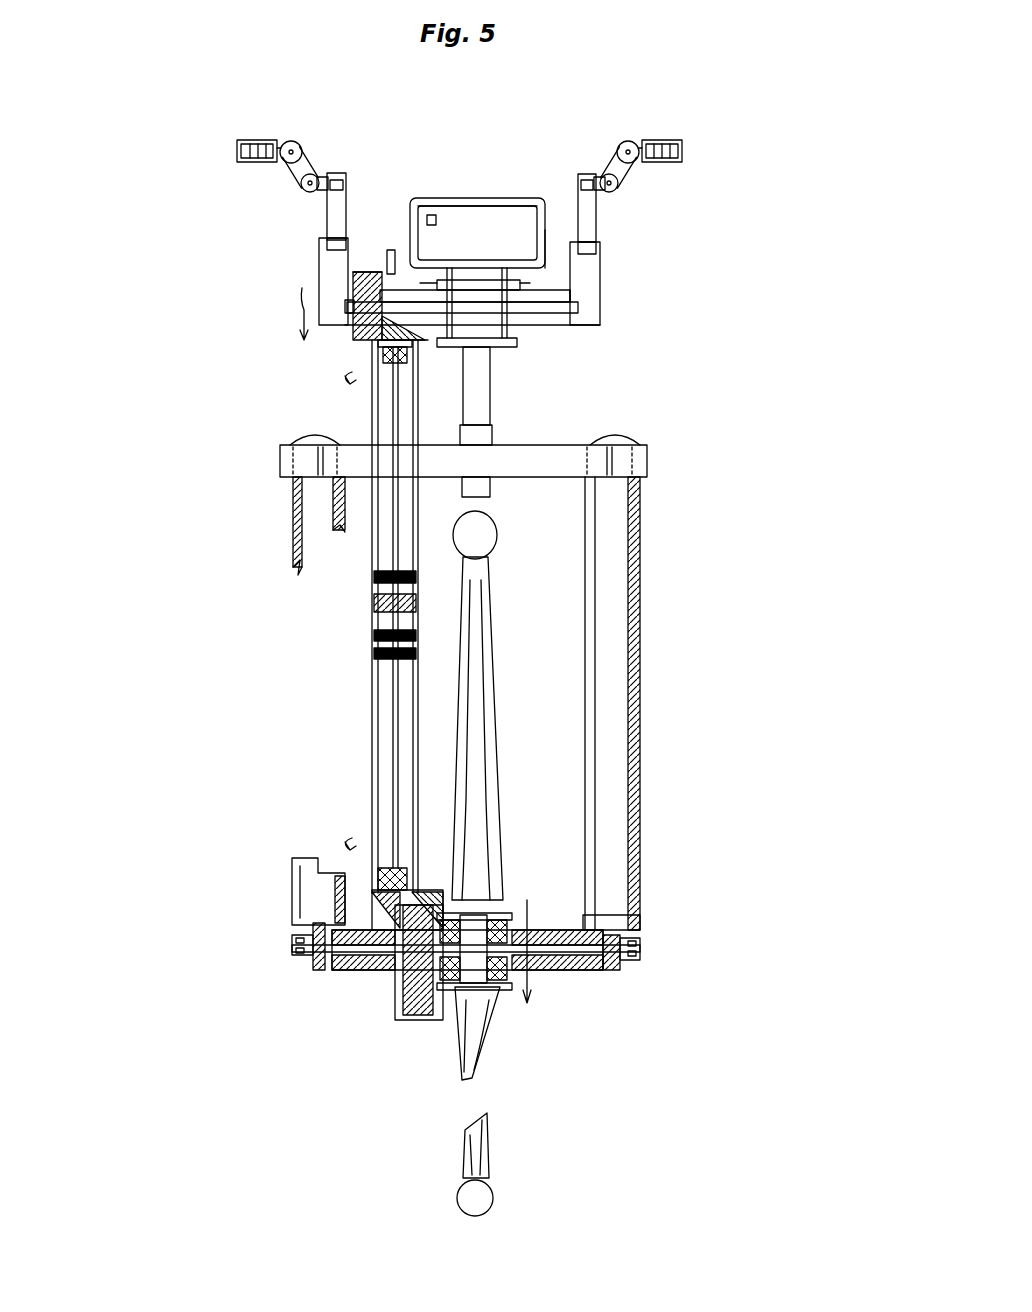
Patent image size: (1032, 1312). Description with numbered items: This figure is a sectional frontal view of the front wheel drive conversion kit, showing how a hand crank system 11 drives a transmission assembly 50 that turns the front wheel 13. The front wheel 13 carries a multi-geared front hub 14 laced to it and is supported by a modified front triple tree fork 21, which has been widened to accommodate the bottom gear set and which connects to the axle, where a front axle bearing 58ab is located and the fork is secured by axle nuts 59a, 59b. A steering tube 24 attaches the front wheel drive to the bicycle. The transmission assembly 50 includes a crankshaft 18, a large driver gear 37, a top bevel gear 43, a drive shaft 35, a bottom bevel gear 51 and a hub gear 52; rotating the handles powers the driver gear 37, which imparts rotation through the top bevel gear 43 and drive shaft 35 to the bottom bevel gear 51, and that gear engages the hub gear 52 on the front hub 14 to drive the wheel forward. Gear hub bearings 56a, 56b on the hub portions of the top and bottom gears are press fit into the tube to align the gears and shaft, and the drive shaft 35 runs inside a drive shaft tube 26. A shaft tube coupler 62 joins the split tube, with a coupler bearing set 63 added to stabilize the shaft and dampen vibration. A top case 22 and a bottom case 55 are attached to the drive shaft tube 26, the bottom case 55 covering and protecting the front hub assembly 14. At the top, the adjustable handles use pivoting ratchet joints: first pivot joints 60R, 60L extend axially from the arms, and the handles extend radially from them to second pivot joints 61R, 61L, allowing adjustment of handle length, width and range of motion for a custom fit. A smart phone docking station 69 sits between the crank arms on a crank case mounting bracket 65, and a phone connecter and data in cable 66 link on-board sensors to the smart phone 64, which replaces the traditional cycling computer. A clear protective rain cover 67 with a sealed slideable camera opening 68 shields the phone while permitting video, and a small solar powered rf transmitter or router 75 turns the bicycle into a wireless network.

The hand crank system 11 is at (614, 284).
The front wheel 13 is at (490, 637).
The multi-geared front hub 14 is at (510, 898).
The crankshaft 18 is at (565, 322).
The modified front triple tree fork 21 is at (292, 882).
The top case 22 is at (512, 333).
The steering tube 24 is at (482, 408).
The drive shaft tube 26 is at (372, 720).
The drive shaft 35 is at (393, 530).
The large driver gear 37 is at (368, 272).
The top bevel gear 43 is at (347, 318).
The transmission assembly 50 is at (347, 330).
The bottom bevel gear 51 is at (420, 890).
The hub gear 52 is at (400, 995).
The bottom case 55 is at (395, 1010).
The gear hub bearing 56a is at (378, 366).
The gear hub bearing 56b is at (380, 874).
The front axle bearing 58ab is at (510, 970).
The axle nut 59a is at (303, 968).
The axle nut 59b is at (633, 968).
The first pivot ratchet joint 60R is at (297, 149).
The first pivot ratchet joint 60L is at (618, 146).
The second pivot ratchet joint 61R is at (300, 184).
The second pivot ratchet joint 61L is at (620, 188).
The shaft tube coupler 62 is at (377, 604).
The coupler bearing set 63 is at (417, 653).
The smart phone 64 is at (477, 233).
The crank case mounting bracket 65 is at (448, 348).
The phone connecter / data in cable 66 is at (527, 292).
The clear protective rain cover 67 is at (515, 204).
The camera opening 68 is at (428, 216).
The smart phone docking station 69 is at (538, 283).
The solar powered rf transmitter or router 75 is at (388, 246).